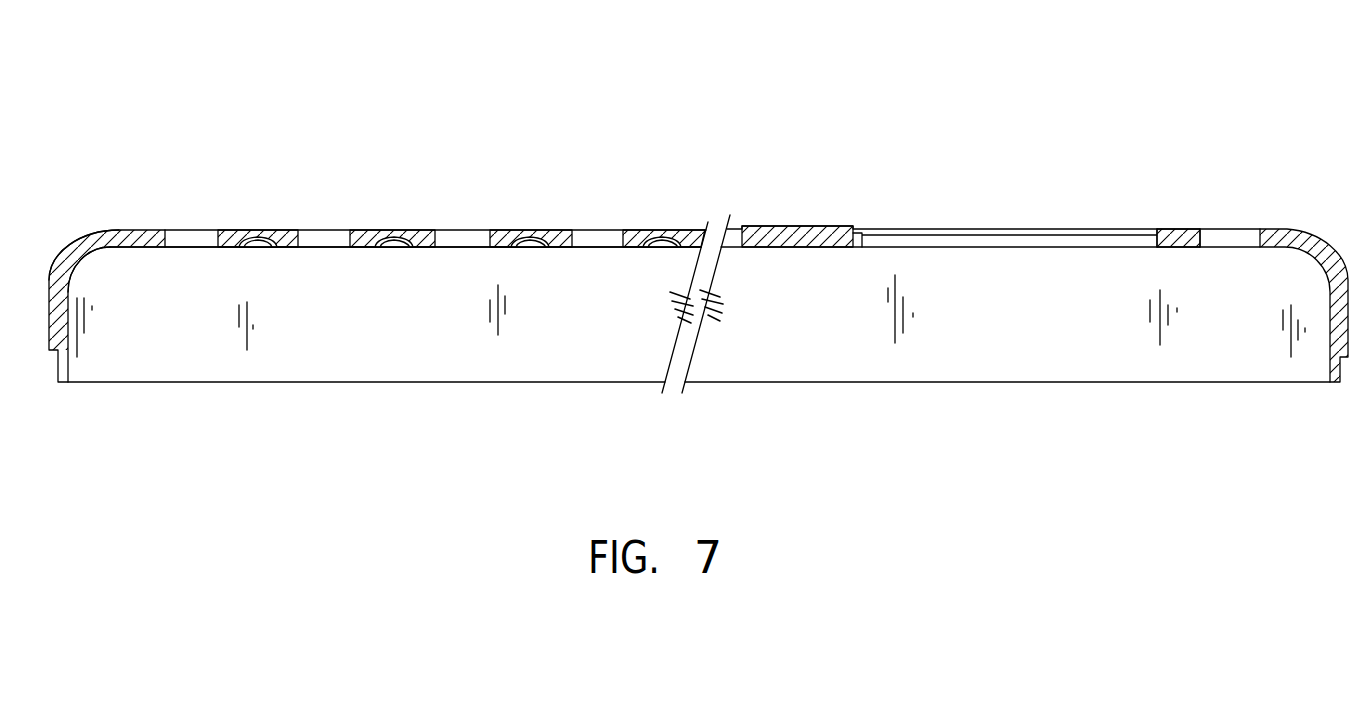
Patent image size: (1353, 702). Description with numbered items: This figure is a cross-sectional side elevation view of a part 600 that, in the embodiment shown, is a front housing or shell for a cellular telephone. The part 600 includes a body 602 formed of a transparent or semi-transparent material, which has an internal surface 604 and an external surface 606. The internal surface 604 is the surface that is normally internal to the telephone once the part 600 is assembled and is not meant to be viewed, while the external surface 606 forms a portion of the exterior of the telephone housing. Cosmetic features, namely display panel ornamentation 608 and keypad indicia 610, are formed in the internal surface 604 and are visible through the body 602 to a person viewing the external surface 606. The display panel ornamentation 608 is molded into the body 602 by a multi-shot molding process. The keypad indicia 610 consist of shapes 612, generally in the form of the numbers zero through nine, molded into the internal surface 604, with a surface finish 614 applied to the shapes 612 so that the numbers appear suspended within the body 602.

The part 600 is at (711, 158).
The body 602 is at (125, 230).
The internal surface 604 is at (358, 248).
The external surface 606 is at (365, 230).
The display panel ornamentation 608 is at (803, 247).
The keypad indicia 610 is at (527, 248).
The shapes 612 is at (518, 230).
The surface finish 614 is at (557, 248).